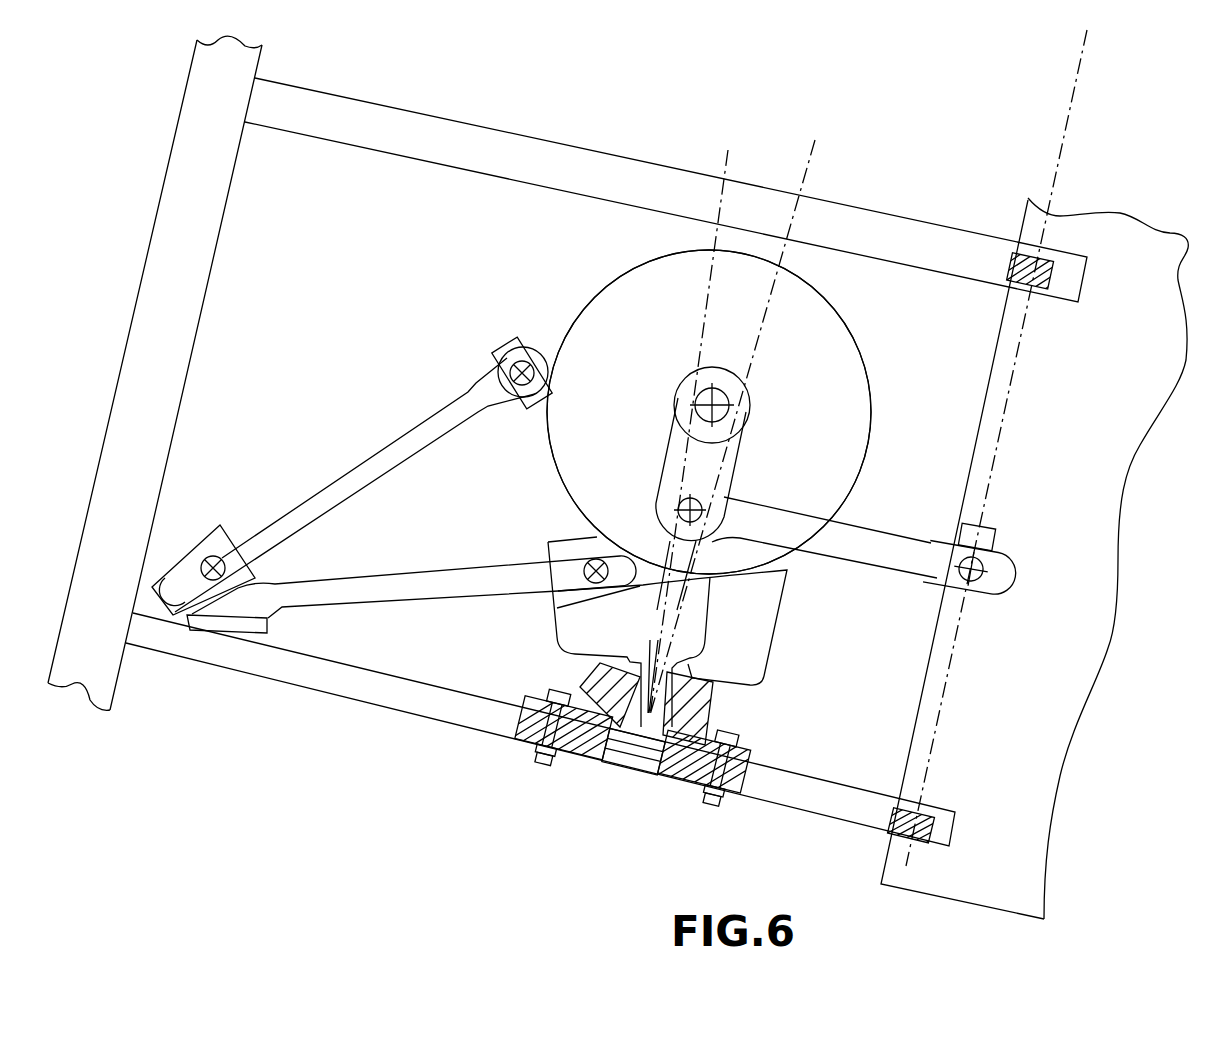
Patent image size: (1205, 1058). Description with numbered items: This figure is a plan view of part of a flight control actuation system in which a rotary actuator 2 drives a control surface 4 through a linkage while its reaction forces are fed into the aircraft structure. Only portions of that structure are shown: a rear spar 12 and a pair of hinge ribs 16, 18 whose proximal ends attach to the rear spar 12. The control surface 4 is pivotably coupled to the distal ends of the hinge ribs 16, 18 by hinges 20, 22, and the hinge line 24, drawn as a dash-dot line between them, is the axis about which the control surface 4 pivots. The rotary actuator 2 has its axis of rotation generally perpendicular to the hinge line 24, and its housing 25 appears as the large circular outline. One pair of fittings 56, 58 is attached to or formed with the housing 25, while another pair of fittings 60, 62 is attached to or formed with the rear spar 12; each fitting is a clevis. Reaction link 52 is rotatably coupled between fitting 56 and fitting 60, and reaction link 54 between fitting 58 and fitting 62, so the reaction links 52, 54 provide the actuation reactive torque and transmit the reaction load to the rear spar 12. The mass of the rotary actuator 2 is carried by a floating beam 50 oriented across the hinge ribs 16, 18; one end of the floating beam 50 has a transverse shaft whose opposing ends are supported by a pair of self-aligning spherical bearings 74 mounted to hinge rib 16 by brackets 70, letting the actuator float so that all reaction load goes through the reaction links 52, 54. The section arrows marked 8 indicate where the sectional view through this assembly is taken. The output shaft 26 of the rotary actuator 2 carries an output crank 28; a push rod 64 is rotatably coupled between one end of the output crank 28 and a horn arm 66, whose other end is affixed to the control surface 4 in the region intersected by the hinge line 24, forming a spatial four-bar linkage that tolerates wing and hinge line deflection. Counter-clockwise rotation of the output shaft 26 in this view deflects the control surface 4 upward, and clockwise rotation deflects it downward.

The rotary actuator 2 is at (877, 366).
The control surface 4 is at (1104, 706).
The section line 8- 8 is at (690, 232).
The rear spar 12 is at (177, 125).
The hinge rib 16 is at (466, 714).
The hinge rib 18 is at (588, 149).
The hinge 20 is at (950, 846).
The hinge 22 is at (1078, 302).
The hinge line 24 is at (937, 732).
The housing 25 is at (872, 414).
The output shaft 26 is at (728, 395).
The output crank 28 is at (730, 470).
The floating beam 50 is at (727, 656).
The reaction link 52 is at (400, 440).
The reaction link 54 is at (432, 576).
The fitting 56 is at (522, 337).
The fitting 58 is at (566, 541).
The fitting 60 is at (197, 530).
The fitting 62 is at (248, 637).
The push rod 64 is at (879, 562).
The horn arm 66 is at (988, 530).
The bracket 70 is at (592, 681).
The self-aligning spherical bearing 74 is at (620, 706).